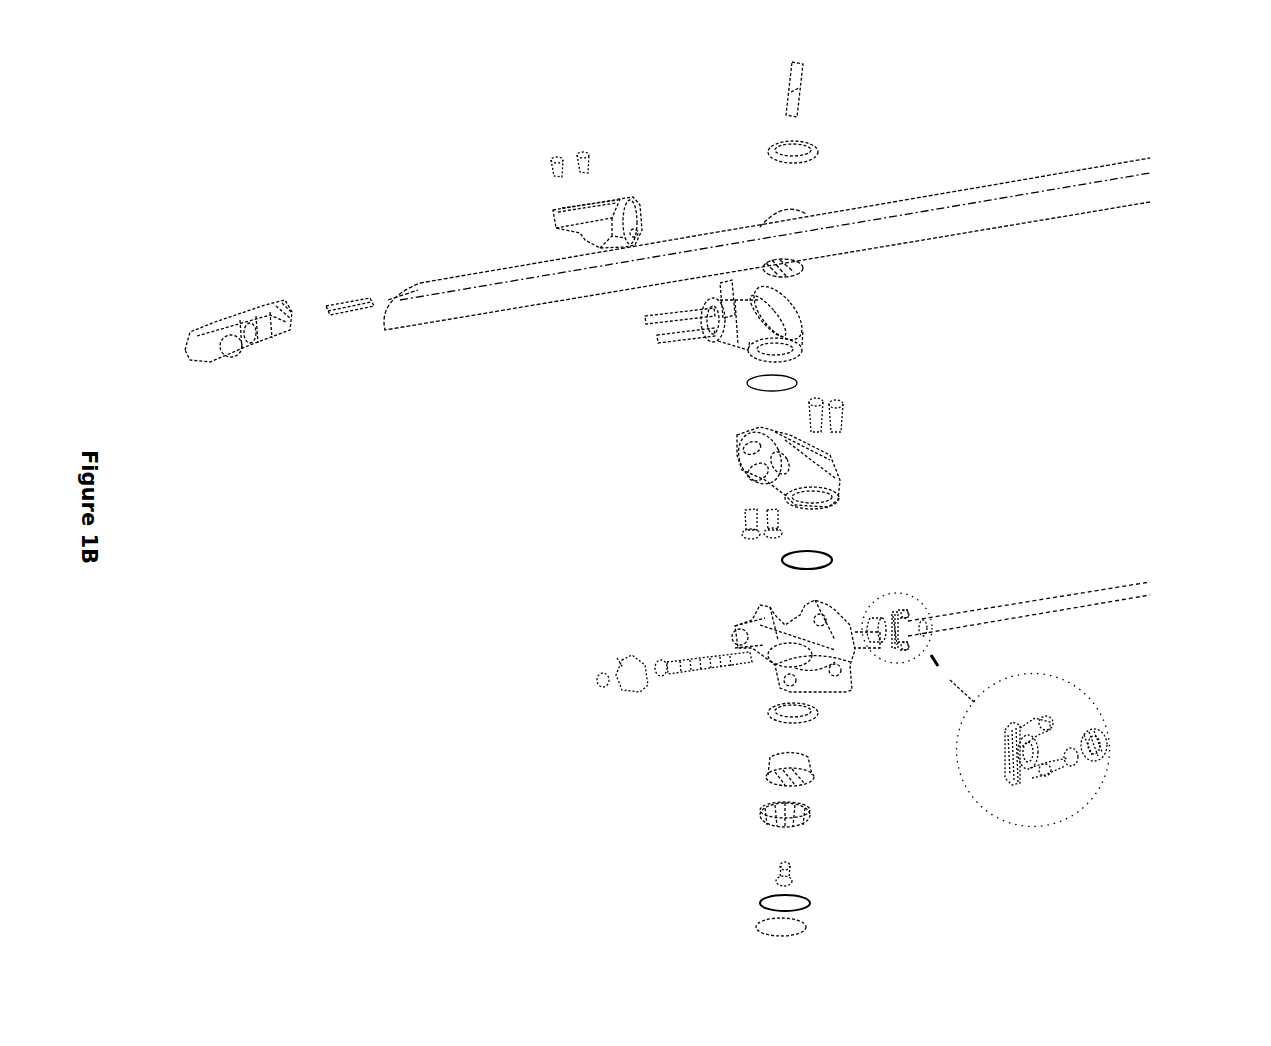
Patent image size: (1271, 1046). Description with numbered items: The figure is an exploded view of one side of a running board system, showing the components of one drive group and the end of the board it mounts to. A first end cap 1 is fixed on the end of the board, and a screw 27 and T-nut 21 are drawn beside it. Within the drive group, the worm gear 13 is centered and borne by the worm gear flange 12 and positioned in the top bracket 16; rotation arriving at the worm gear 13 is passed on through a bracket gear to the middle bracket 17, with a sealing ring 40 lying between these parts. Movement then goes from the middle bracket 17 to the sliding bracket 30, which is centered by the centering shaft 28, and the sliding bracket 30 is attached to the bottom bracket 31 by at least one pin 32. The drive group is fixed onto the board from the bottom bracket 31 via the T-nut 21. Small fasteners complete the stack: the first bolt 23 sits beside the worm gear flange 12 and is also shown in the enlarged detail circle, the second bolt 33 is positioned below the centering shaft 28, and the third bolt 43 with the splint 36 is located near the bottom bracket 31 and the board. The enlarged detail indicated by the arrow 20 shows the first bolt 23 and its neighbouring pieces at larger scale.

The first end cap 1 is at (197, 350).
The T-nut 21 is at (346, 311).
The screw 27 is at (396, 266).
The third bolt 43 is at (555, 164).
The bottom bracket 31 is at (619, 208).
The splint 36 is at (800, 82).
The sliding bracket 30 is at (801, 326).
The pin 32 is at (678, 343).
The middle bracket 17 is at (744, 457).
The sealing ring 40 is at (831, 557).
The worm gear flange 12 is at (639, 670).
The first bolt 23 is at (616, 661).
The worm gear 13 is at (736, 661).
The top bracket 16 is at (827, 681).
The centering shaft 28 is at (783, 757).
The second bolt 33 is at (783, 864).
The assembly 20 is at (1176, 802).